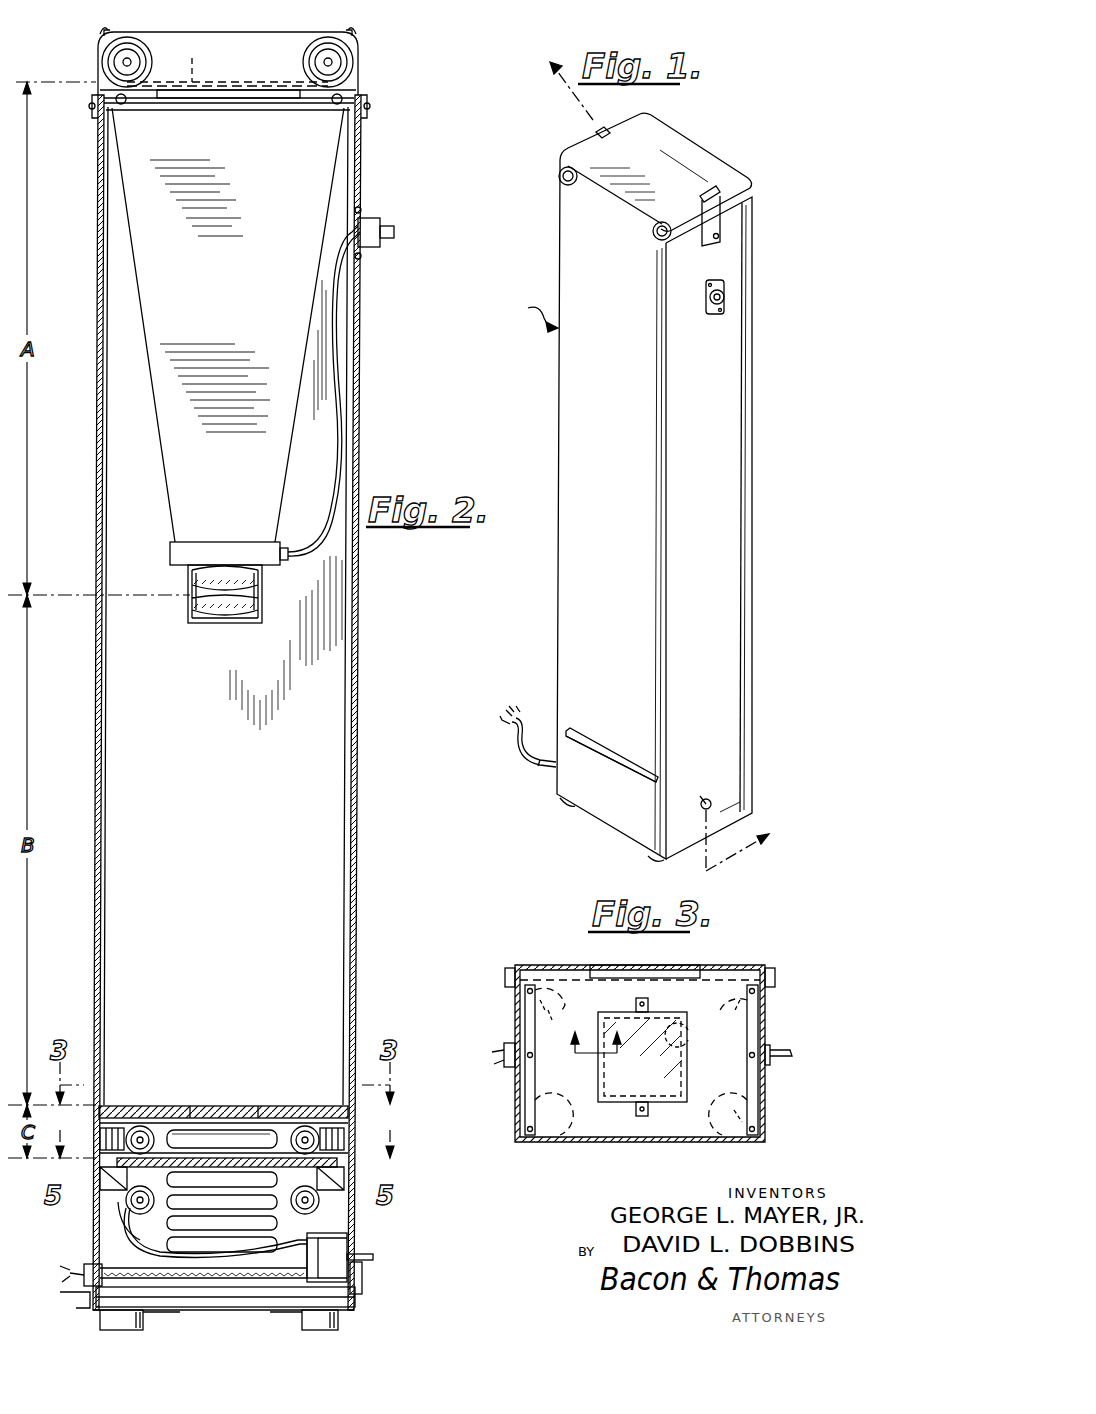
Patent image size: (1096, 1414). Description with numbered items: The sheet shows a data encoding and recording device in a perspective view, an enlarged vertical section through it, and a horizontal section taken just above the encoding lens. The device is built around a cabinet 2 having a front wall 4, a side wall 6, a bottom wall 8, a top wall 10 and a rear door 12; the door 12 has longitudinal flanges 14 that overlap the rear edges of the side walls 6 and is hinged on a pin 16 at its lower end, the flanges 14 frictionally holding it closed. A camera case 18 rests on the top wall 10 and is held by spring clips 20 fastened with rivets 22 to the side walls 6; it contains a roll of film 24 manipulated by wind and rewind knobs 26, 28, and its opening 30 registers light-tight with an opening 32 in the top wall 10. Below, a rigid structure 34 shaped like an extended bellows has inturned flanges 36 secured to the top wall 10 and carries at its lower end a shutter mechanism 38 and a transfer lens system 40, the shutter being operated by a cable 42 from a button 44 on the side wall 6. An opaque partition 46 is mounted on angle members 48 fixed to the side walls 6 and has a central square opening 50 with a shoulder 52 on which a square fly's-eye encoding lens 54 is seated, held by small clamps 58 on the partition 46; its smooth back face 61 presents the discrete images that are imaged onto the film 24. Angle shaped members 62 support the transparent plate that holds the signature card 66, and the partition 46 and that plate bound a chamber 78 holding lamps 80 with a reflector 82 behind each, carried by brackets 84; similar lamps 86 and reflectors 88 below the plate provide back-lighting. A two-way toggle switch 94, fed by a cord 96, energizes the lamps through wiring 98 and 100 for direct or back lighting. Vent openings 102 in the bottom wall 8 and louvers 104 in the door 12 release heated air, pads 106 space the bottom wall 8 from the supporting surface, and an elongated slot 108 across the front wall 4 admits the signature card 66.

In FIG. 2, the cabinet 2 is at (360, 870).
In FIG. 1, the cabinet 2 is at (645, 466).
In FIG. 3, the cabinet 2 is at (772, 1005).
In FIG. 1, the front wall 4 is at (562, 522).
In FIG. 3, the front wall 4 is at (574, 1160).
In FIG. 2, the side wall 6 is at (102, 740).
In FIG. 1, the side wall 6 is at (740, 472).
In FIG. 3, the side wall 6 is at (514, 1118).
In FIG. 2, the bottom wall 8 is at (230, 1308).
In FIG. 2, the top wall 10 is at (352, 92).
In FIG. 2, the rear door 12 is at (264, 963).
In FIG. 1, the rear door 12 is at (756, 378).
In FIG. 3, the rear door 12 is at (724, 966).
In FIG. 2, the longitudinal flanges 14 is at (104, 455).
In FIG. 1, the longitudinal flanges 14 is at (748, 540).
In FIG. 3, the longitudinal flanges 14 is at (512, 980).
In FIG. 2, the pin 16 is at (360, 1284).
In FIG. 1, the pin 16 is at (742, 812).
In FIG. 3, the pin 16 is at (562, 962).
In FIG. 2, the camera case 18 is at (198, 46).
In FIG. 1, the camera case 18 is at (680, 148).
In FIG. 2, the spring clips 20 is at (100, 48).
In FIG. 1, the spring clips 20 is at (596, 134).
In FIG. 2, the rivets 22 is at (92, 112).
In FIG. 1, the rivets 22 is at (724, 228).
In FIG. 2, the film 24 is at (227, 64).
In FIG. 2, the wind knob 26 is at (146, 54).
In FIG. 1, the wind knob 26 is at (575, 190).
In FIG. 2, the rewind knob 28 is at (322, 42).
In FIG. 1, the rewind knob 28 is at (654, 236).
In FIG. 2, the opening 30 is at (280, 84).
In FIG. 2, the opening 32 is at (172, 100).
In FIG. 2, the rigid structure 34 is at (165, 440).
In FIG. 2, the inturned flanges 36 is at (126, 104).
In FIG. 2, the shutter mechanism 38 is at (170, 552).
In FIG. 2, the transfer lens system 40 is at (226, 620).
In FIG. 2, the cable 42 is at (304, 560).
In FIG. 2, the button 44 is at (388, 228).
In FIG. 1, the button 44 is at (728, 298).
In FIG. 2, the opaque partition 46 is at (298, 1100).
In FIG. 3, the opaque partition 46 is at (658, 1138).
In FIG. 3, the angle members 48 is at (758, 1020).
In FIG. 2, the opening 50 is at (248, 1106).
In FIG. 3, the opening 50 is at (596, 1032).
In FIG. 2, the shoulder 52 is at (182, 1122).
In FIG. 3, the shoulder 52 is at (690, 1034).
In FIG. 2, the encoding lens 54 is at (200, 1108).
In FIG. 3, the encoding lens 54 is at (666, 1020).
In FIG. 2, the clips 58 is at (214, 1106).
In FIG. 3, the clips 58 is at (638, 1000).
In FIG. 2, the back face 61 is at (230, 1106).
In FIG. 2, the angle shaped members 62 is at (104, 1178).
In FIG. 2, the signature card 66 is at (276, 1158).
In FIG. 1, the signature card 66 is at (598, 748).
In FIG. 2, the chamber 78 is at (344, 1128).
In FIG. 2, the lamps 80 is at (146, 1126).
In FIG. 2, the reflector 82 is at (118, 1126).
In FIG. 2, the brackets 84 is at (102, 1140).
In FIG. 2, the lamps 86 is at (108, 1222).
In FIG. 2, the reflectors 88 is at (131, 1227).
In FIG. 2, the two-way toggle switch 94 is at (372, 1258).
In FIG. 1, the two-way toggle switch 94 is at (718, 800).
In FIG. 3, the two-way toggle switch 94 is at (792, 1056).
In FIG. 2, the cord 96 is at (68, 1274).
In FIG. 1, the cord 96 is at (540, 775).
In FIG. 3, the cord 96 is at (503, 1055).
In FIG. 2, the wiring 98 is at (348, 1230).
In FIG. 2, the wiring 100 is at (112, 1252).
In FIG. 2, the vent openings 102 is at (176, 1312).
In FIG. 2, the louvers 104 is at (272, 1200).
In FIG. 3, the louvers 104 is at (676, 968).
In FIG. 2, the pads 106 is at (102, 1322).
In FIG. 1, the pads 106 is at (640, 856).
In FIG. 3, the pads 106 is at (518, 1020).
In FIG. 1, the elongated slot 108 is at (600, 740).